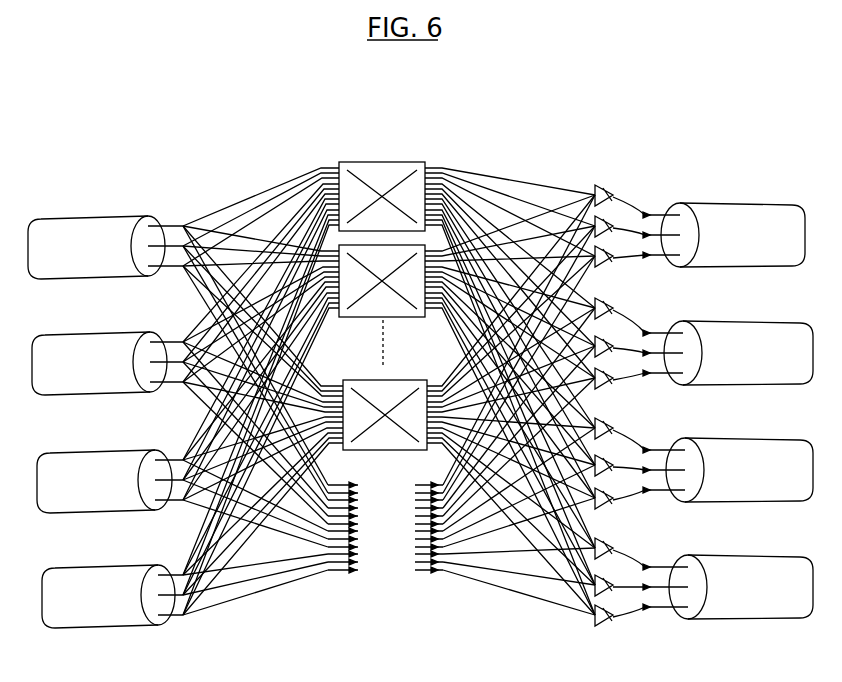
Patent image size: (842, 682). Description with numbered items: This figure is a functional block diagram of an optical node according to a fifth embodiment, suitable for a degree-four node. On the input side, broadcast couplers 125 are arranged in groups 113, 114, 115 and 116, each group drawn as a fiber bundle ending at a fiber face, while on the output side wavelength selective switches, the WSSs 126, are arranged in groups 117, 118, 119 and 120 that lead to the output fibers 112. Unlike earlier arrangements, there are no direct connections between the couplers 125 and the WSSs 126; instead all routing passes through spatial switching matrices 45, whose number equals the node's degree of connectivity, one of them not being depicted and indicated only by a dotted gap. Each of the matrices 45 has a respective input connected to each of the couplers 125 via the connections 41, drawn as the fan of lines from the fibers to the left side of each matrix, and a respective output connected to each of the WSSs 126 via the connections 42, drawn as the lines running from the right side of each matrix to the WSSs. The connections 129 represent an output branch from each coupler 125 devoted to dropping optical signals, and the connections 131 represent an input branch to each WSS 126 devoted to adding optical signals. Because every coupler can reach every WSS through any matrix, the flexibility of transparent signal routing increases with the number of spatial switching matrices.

The connections 41 is at (240, 195).
The connections 42 is at (504, 172).
The spatial switching matrices 45 is at (385, 162).
The output fibers 112 is at (156, 216).
The group 113 is at (72, 215).
The group 114 is at (76, 334).
The group 115 is at (80, 450).
The fourth input optical fiber 116 is at (84, 566).
The group 117 is at (724, 203).
The group 118 is at (736, 322).
The group 119 is at (736, 442).
The fourth output optical fiber 120 is at (742, 557).
The broadcast couplers 125 is at (178, 220).
The WSSs 126 is at (598, 190).
The connections 129 is at (290, 590).
The connections 131 is at (498, 596).